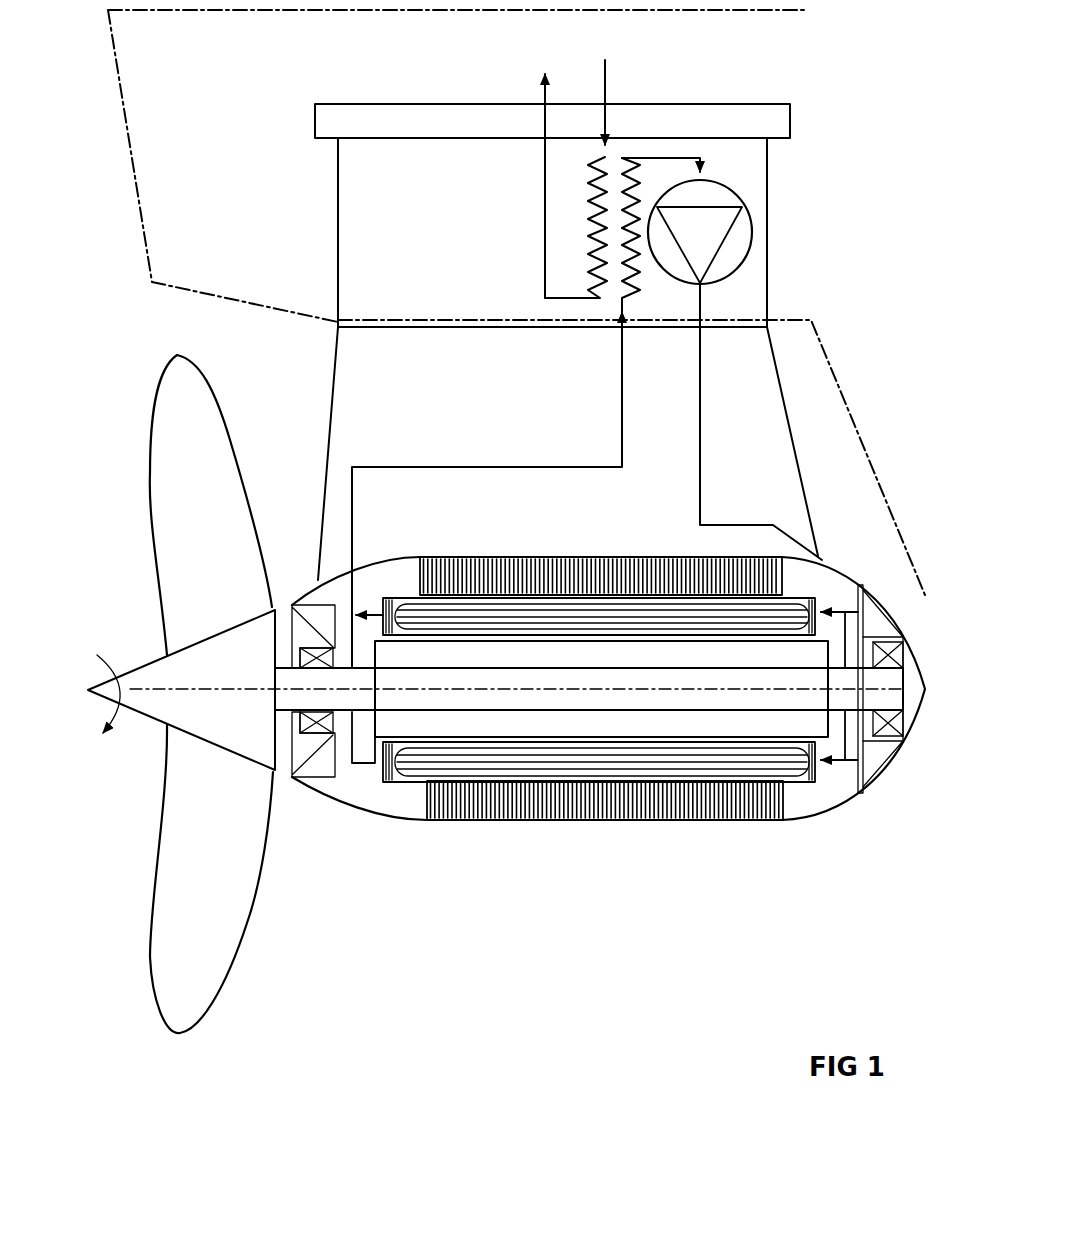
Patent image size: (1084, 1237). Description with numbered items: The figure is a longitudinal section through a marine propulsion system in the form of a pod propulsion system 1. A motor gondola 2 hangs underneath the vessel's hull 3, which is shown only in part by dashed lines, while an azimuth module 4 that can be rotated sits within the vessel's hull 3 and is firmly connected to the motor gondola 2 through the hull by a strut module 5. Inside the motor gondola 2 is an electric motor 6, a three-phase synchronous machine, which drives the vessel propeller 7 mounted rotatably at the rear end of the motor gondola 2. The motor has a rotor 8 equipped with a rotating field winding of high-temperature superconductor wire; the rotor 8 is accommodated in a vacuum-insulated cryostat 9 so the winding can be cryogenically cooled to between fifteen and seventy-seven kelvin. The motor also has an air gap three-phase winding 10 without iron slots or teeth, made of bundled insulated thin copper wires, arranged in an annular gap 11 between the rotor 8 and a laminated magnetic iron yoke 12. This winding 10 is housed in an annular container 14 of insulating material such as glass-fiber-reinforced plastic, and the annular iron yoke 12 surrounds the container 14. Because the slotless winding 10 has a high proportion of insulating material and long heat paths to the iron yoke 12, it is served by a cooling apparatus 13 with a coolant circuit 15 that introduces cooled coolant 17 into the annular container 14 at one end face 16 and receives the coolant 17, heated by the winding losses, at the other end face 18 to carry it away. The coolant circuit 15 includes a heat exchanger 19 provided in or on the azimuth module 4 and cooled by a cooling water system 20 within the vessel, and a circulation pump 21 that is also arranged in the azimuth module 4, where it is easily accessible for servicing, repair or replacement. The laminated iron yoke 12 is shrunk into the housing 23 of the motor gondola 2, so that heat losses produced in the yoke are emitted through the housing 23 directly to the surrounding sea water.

The pod propulsion system 1 is at (296, 438).
The motor gondola 2 is at (852, 797).
The vessel's hull 3 is at (123, 95).
The azimuth module 4 is at (770, 278).
The strut module 5 is at (808, 495).
The electric motor 6 is at (572, 792).
The vessel propeller 7 is at (237, 943).
The rotor 8 is at (413, 697).
The cryostat 9 is at (362, 723).
The air gap three-phase winding 10 is at (700, 765).
The annular gap 11 is at (515, 641).
The laminated magnetic iron yoke 12 is at (490, 822).
The cooling apparatus 13 is at (705, 487).
The annular container 14 is at (400, 597).
The coolant circuit 15 is at (553, 468).
The end face 16 is at (820, 770).
The coolant 17 is at (823, 600).
The other end face 18 is at (337, 597).
The heat exchanger 19 is at (640, 186).
The cooling water system 20 is at (545, 213).
The circulation pump 21 is at (740, 208).
The housing 23 is at (618, 820).